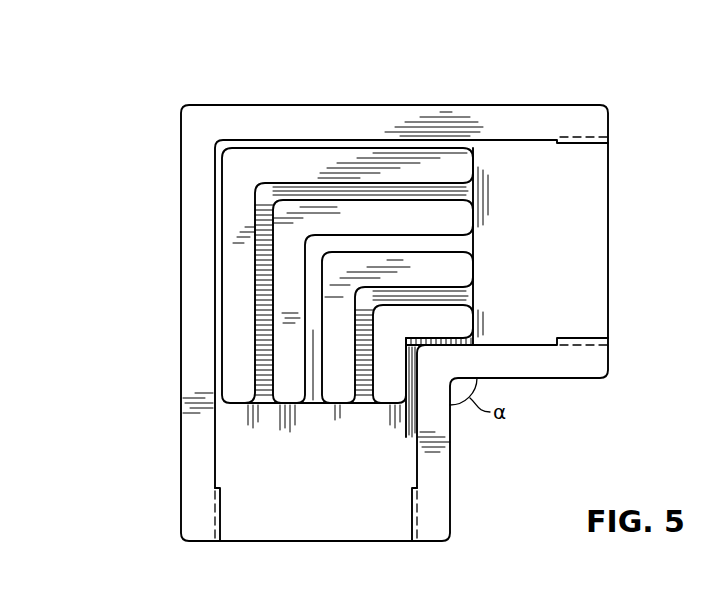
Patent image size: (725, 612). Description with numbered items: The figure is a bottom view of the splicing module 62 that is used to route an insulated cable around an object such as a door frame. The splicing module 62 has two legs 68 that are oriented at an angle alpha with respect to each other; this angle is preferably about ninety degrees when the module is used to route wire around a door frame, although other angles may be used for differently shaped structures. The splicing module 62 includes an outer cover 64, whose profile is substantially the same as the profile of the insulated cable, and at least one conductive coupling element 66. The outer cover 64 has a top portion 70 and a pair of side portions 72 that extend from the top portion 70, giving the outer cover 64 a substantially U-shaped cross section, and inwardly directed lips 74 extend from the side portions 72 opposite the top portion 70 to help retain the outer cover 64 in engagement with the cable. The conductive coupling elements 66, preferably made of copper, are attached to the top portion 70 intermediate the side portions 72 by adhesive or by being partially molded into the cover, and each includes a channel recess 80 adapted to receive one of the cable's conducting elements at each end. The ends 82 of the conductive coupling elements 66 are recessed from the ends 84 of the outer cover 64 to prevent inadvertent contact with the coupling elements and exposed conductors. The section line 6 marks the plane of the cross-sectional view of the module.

The section line 6- 6 is at (153, 507).
The splicing module 62 is at (183, 95).
The outer cover 64 is at (329, 116).
The conductive coupling element 66 is at (462, 264).
The legs 68 is at (510, 114).
The top portion 70 is at (270, 527).
The side portions 72 is at (188, 353).
The inwardly directed lips 74 is at (588, 143).
The channel recess 80 is at (363, 403).
The ends of the conductive coupling elements 82 is at (473, 305).
The ends of the outer cover 84 is at (608, 366).